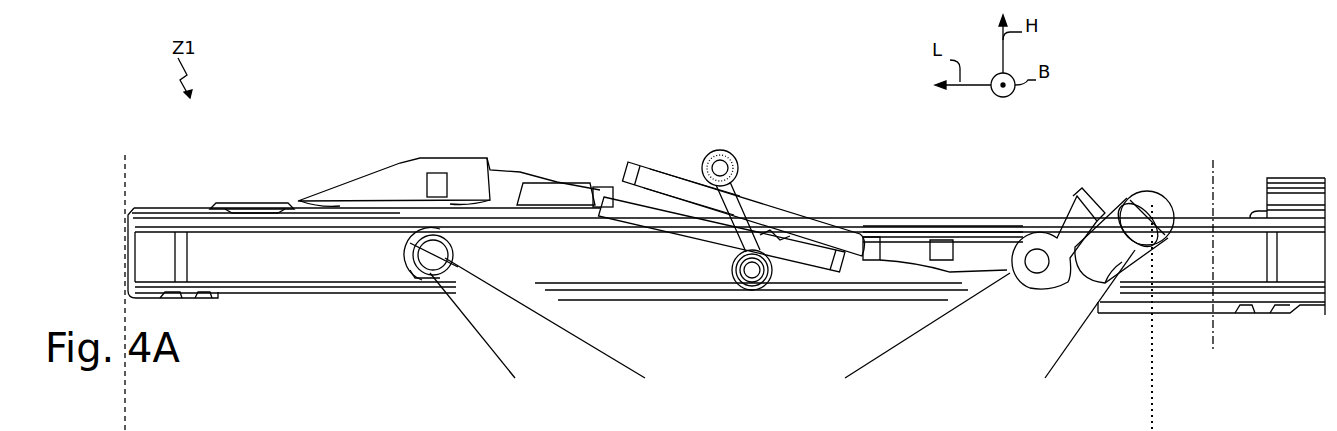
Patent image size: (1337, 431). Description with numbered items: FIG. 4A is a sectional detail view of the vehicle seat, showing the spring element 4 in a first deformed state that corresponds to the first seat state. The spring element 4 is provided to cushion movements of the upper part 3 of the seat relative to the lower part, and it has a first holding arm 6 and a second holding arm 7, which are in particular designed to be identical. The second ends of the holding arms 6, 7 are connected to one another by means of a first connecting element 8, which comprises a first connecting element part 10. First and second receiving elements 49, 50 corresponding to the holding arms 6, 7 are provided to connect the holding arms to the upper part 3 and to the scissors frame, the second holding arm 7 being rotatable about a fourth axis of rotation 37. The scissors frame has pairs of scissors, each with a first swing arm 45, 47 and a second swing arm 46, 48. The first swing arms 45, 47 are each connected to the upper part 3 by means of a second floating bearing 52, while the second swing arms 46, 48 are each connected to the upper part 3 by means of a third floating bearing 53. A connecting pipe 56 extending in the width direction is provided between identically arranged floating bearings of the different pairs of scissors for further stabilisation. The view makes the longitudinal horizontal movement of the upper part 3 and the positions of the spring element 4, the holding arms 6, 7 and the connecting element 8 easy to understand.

The upper part 3 is at (247, 203).
The first receiving element 49 is at (389, 185).
The first holding arm 6 is at (620, 183).
The second holding arm 7 is at (840, 238).
The first connecting element part 10 is at (748, 215).
The third floating bearing 53 is at (437, 278).
The second swing arm 46 is at (560, 318).
The second swing arm 48 is at (603, 368).
The first swing arm 45 is at (910, 325).
The first swing arm 47 is at (898, 355).
The second floating bearing 52 is at (1105, 293).
The second receiving element 50 is at (1058, 215).
The fourth axis of rotation 37 is at (1032, 250).
The connecting pipe 56 is at (1133, 198).
The spring element 4 is at (703, 100).
The first connecting element 8 is at (731, 100).